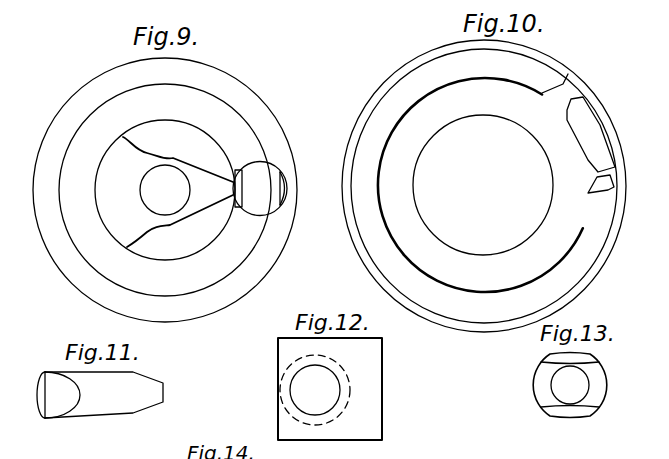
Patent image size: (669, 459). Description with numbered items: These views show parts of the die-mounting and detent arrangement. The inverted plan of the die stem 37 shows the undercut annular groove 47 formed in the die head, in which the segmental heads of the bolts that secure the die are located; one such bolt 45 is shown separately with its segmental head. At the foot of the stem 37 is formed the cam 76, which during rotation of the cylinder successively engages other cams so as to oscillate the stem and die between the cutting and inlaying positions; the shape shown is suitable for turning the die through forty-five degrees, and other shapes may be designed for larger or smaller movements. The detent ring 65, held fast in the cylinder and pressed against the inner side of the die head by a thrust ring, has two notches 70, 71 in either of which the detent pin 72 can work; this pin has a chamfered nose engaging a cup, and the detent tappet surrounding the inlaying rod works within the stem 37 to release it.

In FIG. 9, the stem 37 is at (103, 227).
In FIG. 9, the cam 76 is at (203, 211).
In FIG. 9, the undercut annular groove 47 is at (237, 197).
In FIG. 10, the detent ring 65 is at (372, 258).
In FIG. 10, the notch 70 is at (567, 110).
In FIG. 10, the notch 71 is at (597, 177).
In FIG. 11, the detent pin 72 is at (118, 414).
In FIG. 13, the bolt 45 is at (567, 378).